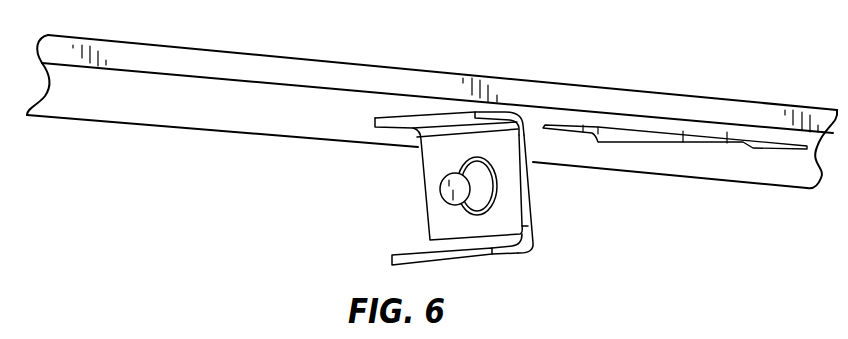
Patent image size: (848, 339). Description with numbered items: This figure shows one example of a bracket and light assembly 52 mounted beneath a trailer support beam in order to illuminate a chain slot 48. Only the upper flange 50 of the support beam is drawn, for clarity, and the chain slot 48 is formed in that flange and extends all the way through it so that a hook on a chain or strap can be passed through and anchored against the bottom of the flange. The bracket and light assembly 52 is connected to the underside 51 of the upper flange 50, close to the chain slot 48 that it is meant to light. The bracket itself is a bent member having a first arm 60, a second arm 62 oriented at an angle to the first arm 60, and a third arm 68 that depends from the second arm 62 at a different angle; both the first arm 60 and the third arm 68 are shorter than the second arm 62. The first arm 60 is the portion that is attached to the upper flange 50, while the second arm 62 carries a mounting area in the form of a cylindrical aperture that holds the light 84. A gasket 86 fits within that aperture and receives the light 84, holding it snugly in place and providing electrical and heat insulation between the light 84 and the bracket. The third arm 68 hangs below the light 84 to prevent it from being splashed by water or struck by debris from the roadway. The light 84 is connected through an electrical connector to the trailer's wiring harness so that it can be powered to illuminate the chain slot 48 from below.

The chain slot 48 is at (657, 146).
The upper flange 50 is at (733, 113).
The underside of the upper flange 51 is at (182, 102).
The bracket and light assembly 52 is at (449, 209).
The first arm 60 is at (406, 124).
The second arm 62 is at (530, 176).
The third arm 68 is at (482, 255).
The light 84 is at (440, 190).
The gasket 86 is at (494, 196).